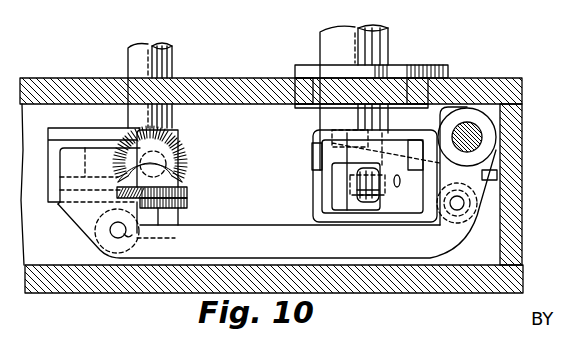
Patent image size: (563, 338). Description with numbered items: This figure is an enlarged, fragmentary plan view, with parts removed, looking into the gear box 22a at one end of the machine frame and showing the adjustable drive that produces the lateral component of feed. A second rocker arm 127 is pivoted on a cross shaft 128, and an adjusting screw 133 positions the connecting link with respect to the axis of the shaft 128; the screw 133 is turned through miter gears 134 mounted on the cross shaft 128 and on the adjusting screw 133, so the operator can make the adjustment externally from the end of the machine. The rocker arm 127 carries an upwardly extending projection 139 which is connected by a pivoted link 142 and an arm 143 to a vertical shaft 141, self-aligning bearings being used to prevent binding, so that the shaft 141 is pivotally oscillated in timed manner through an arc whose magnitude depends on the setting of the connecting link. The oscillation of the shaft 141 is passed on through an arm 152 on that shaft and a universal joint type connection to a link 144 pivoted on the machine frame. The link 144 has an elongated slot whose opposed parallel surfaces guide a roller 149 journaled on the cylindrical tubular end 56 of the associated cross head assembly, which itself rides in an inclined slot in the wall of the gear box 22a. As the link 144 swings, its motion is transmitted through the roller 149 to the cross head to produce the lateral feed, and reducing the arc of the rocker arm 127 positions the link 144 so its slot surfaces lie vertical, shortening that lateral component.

The gear box 22a is at (47, 112).
The tubular portion 56 is at (390, 43).
The second rocker arm 127 is at (67, 130).
The cross shaft 128 is at (174, 62).
The adjusting screw 133 is at (165, 162).
The miter gears 134 is at (182, 192).
The upwardly extending projection 139 is at (76, 226).
The vertical shaft 141 is at (468, 132).
The pivoted link 142 is at (252, 228).
The arm 143 is at (478, 183).
The link 144 is at (328, 168).
The roller 149 is at (368, 205).
The arm 152 is at (405, 72).